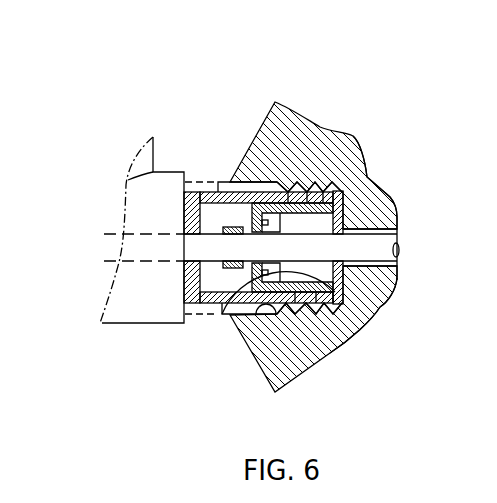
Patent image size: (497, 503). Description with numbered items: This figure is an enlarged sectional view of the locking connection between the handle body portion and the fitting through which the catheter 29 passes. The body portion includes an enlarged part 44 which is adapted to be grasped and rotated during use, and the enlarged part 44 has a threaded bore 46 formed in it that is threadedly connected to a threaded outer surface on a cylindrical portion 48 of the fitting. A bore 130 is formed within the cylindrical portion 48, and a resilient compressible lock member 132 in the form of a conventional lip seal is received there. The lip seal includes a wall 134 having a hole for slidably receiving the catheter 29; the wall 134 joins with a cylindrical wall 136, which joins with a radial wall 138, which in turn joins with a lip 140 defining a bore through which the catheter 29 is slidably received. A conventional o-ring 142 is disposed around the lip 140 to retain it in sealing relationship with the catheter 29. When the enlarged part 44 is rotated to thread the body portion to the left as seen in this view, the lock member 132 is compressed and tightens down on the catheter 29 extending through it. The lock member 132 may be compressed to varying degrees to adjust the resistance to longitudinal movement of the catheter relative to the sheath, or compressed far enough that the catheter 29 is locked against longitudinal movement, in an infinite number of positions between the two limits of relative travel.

The catheter 29 is at (393, 220).
The enlarged part 44 is at (266, 120).
The threaded bore 46 is at (282, 314).
The cylindrical portion 48 is at (201, 204).
The bore 130 is at (183, 217).
The lock member 132 is at (352, 210).
The wall 134 is at (380, 307).
The cylindrical wall 136 is at (318, 197).
The radial wall 138 is at (225, 318).
The lip 140 is at (223, 268).
The o-ring 142 is at (330, 353).